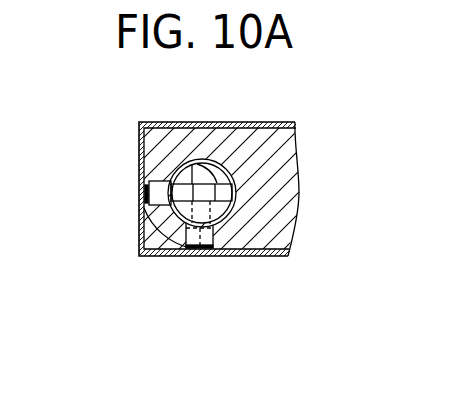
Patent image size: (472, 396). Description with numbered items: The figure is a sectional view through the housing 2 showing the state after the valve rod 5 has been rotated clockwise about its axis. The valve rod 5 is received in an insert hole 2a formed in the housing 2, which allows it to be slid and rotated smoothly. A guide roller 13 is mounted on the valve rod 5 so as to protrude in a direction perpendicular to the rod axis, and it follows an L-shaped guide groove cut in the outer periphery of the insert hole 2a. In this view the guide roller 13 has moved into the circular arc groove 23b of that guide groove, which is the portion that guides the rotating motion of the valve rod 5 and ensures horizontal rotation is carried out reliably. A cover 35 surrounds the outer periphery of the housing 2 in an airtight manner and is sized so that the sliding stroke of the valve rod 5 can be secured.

The housing 2 is at (148, 141).
The insert hole 2a is at (229, 168).
The cover 35 is at (140, 160).
The guide roller 13 is at (155, 197).
The valve rod 5 is at (233, 196).
The circular arc groove 23b is at (163, 228).